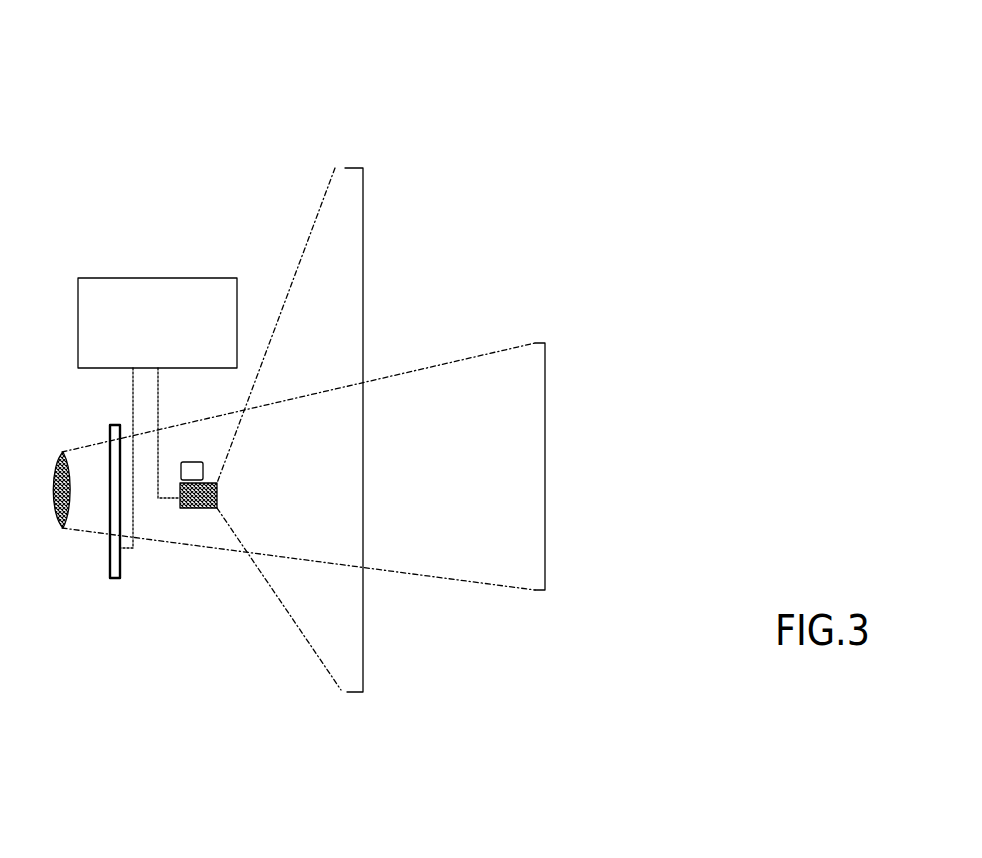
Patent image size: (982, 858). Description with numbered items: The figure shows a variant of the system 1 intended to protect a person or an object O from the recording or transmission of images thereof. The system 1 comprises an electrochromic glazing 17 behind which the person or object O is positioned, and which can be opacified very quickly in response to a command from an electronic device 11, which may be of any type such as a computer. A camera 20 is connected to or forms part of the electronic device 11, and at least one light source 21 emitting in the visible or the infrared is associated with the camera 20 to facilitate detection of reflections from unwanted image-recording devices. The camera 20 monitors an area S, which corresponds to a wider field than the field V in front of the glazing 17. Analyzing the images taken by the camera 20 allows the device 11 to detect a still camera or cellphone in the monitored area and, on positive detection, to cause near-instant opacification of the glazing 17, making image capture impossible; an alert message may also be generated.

The system 1 is at (323, 369).
The electronic device 11 is at (133, 288).
The light source 21 is at (193, 462).
The camera 20 is at (217, 495).
The electrochromic glazing 17 is at (120, 578).
The object O is at (63, 452).
The area S is at (363, 428).
The field V is at (545, 467).